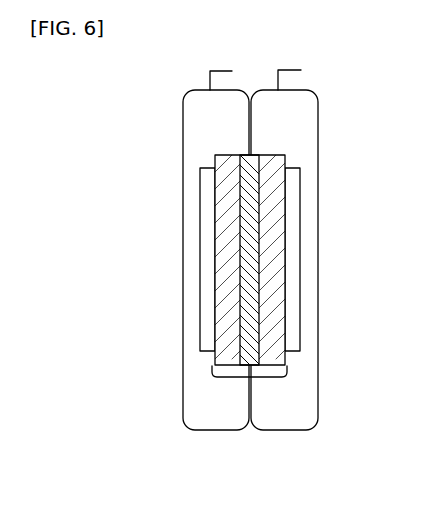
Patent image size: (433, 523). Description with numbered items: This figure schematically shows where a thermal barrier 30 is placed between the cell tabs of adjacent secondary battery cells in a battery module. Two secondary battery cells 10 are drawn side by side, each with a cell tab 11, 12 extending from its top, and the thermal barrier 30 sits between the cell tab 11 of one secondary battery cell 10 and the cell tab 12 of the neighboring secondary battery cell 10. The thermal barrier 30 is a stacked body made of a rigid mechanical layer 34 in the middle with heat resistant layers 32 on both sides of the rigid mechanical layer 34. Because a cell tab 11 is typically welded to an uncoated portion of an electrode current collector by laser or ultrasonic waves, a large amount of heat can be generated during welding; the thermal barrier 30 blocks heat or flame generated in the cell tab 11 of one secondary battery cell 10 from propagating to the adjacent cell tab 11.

The secondary battery cell 10 is at (319, 393).
The cell tab 11 is at (302, 262).
The cell tab 12 is at (307, 69).
The thermal barrier 30 is at (267, 380).
The heat resistant layer 32 is at (287, 320).
The rigid mechanical layer 34 is at (244, 288).